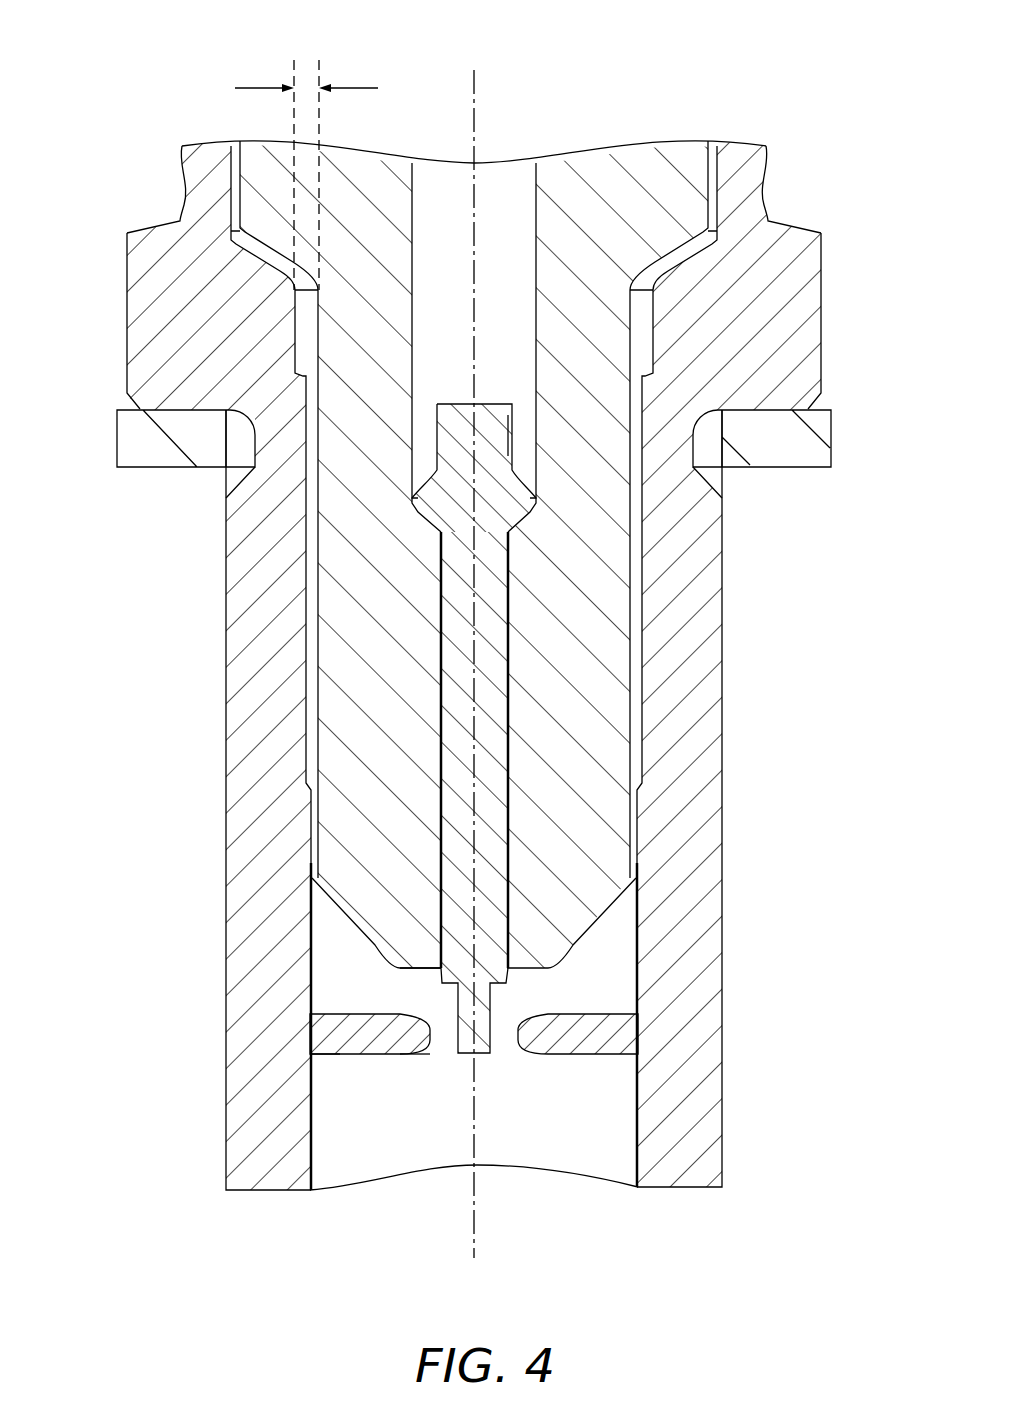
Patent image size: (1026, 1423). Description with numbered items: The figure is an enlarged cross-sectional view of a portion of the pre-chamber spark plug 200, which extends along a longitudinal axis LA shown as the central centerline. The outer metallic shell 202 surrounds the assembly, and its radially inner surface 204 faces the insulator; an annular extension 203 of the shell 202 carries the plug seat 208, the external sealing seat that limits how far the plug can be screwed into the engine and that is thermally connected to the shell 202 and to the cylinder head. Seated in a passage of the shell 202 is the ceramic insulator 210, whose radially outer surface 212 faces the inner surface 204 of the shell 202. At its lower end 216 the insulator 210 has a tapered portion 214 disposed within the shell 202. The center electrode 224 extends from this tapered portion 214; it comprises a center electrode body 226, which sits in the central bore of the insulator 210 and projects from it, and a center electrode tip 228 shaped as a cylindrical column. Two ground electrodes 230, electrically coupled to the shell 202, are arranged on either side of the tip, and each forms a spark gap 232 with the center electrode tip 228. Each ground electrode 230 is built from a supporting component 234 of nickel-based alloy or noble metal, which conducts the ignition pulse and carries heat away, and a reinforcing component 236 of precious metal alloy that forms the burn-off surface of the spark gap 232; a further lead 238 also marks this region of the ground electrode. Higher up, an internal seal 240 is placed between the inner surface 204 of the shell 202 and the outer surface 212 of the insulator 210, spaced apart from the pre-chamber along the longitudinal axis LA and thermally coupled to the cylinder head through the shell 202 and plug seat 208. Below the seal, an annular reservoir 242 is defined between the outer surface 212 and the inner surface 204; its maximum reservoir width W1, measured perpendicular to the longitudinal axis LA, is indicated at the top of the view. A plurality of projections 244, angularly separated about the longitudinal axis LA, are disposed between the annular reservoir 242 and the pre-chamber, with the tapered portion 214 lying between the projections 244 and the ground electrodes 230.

The pre-chamber spark plug 200 is at (124, 65).
The shell 202 is at (745, 178).
The annular extension 203 is at (790, 350).
The inner surface 204 is at (632, 622).
The plug seat 208 is at (770, 440).
The insulator 210 is at (633, 207).
The outer surface 212 is at (630, 545).
The tapered portion 214 is at (585, 925).
The end 216 is at (362, 947).
The center electrode 224 is at (508, 708).
The center electrode body 226 is at (492, 632).
The center electrode tip 228 is at (485, 995).
The ground electrode 230 is at (337, 1043).
The spark gap 232 is at (503, 1068).
The supporting component 234 is at (368, 1057).
The reinforcing component 236 is at (417, 1053).
The outlet gap 238 is at (353, 1083).
The internal seal 240 is at (268, 248).
The annular reservoir 242 is at (288, 328).
The projections 244 is at (315, 820).
The maximum reservoir width W1 is at (262, 88).
The longitudinal axis LA is at (475, 1257).